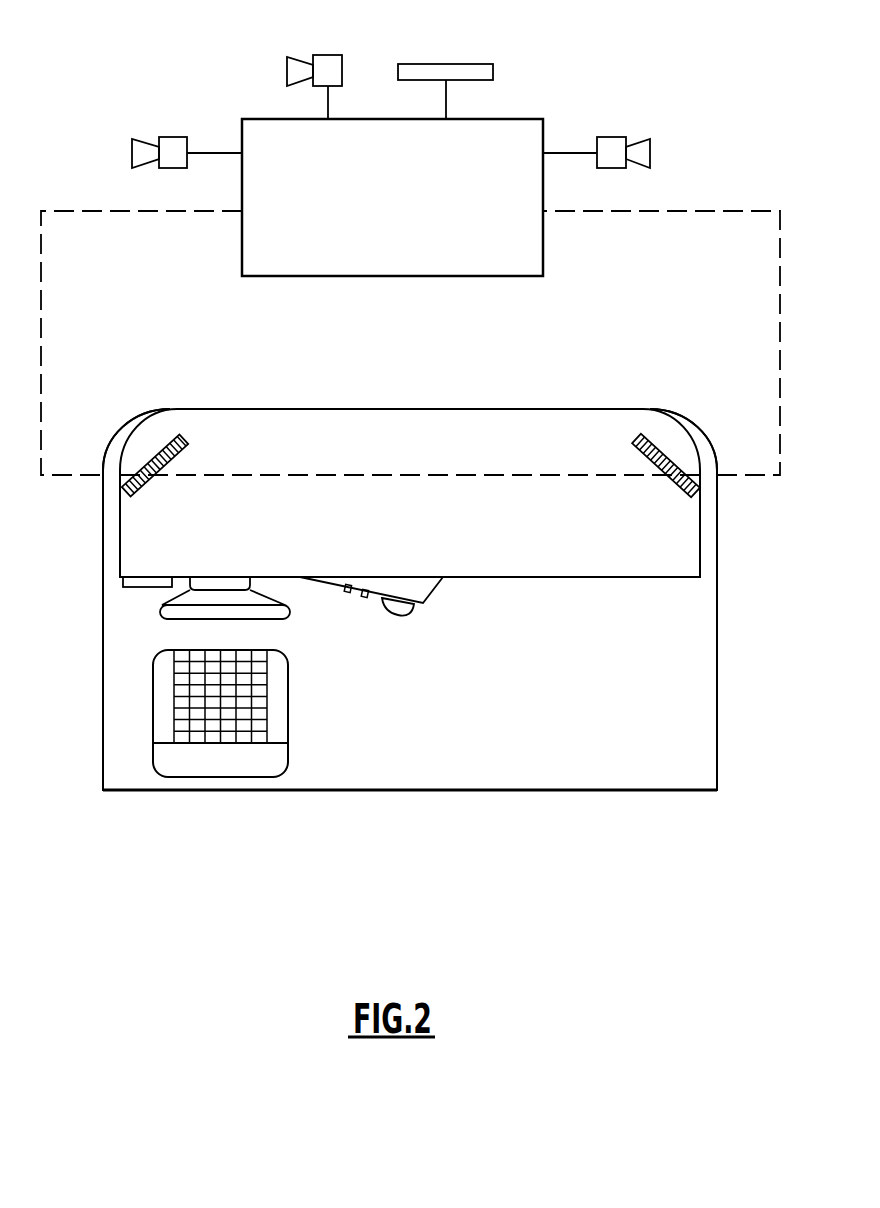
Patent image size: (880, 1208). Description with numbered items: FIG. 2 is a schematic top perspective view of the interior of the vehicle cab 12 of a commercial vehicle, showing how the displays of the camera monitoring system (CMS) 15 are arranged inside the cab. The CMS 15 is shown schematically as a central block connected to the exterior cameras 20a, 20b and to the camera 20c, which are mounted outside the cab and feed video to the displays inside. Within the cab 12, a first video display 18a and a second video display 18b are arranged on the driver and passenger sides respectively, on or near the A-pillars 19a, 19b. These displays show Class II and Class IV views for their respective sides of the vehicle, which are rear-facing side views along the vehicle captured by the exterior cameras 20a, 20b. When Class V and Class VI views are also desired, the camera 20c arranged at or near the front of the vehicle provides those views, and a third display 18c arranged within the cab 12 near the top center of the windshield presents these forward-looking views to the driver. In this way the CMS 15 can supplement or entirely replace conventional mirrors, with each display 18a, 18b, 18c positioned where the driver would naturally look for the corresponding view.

The vehicle cab 12 is at (412, 553).
The camera monitoring system 15 is at (545, 132).
The first video display 18a is at (148, 440).
The second video display 18b is at (672, 442).
The third display 18c is at (478, 64).
The A-pillar 19a is at (118, 446).
The A-pillar 19b is at (702, 446).
The exterior camera 20a is at (172, 137).
The exterior camera 20b is at (610, 137).
The camera 20c is at (328, 55).